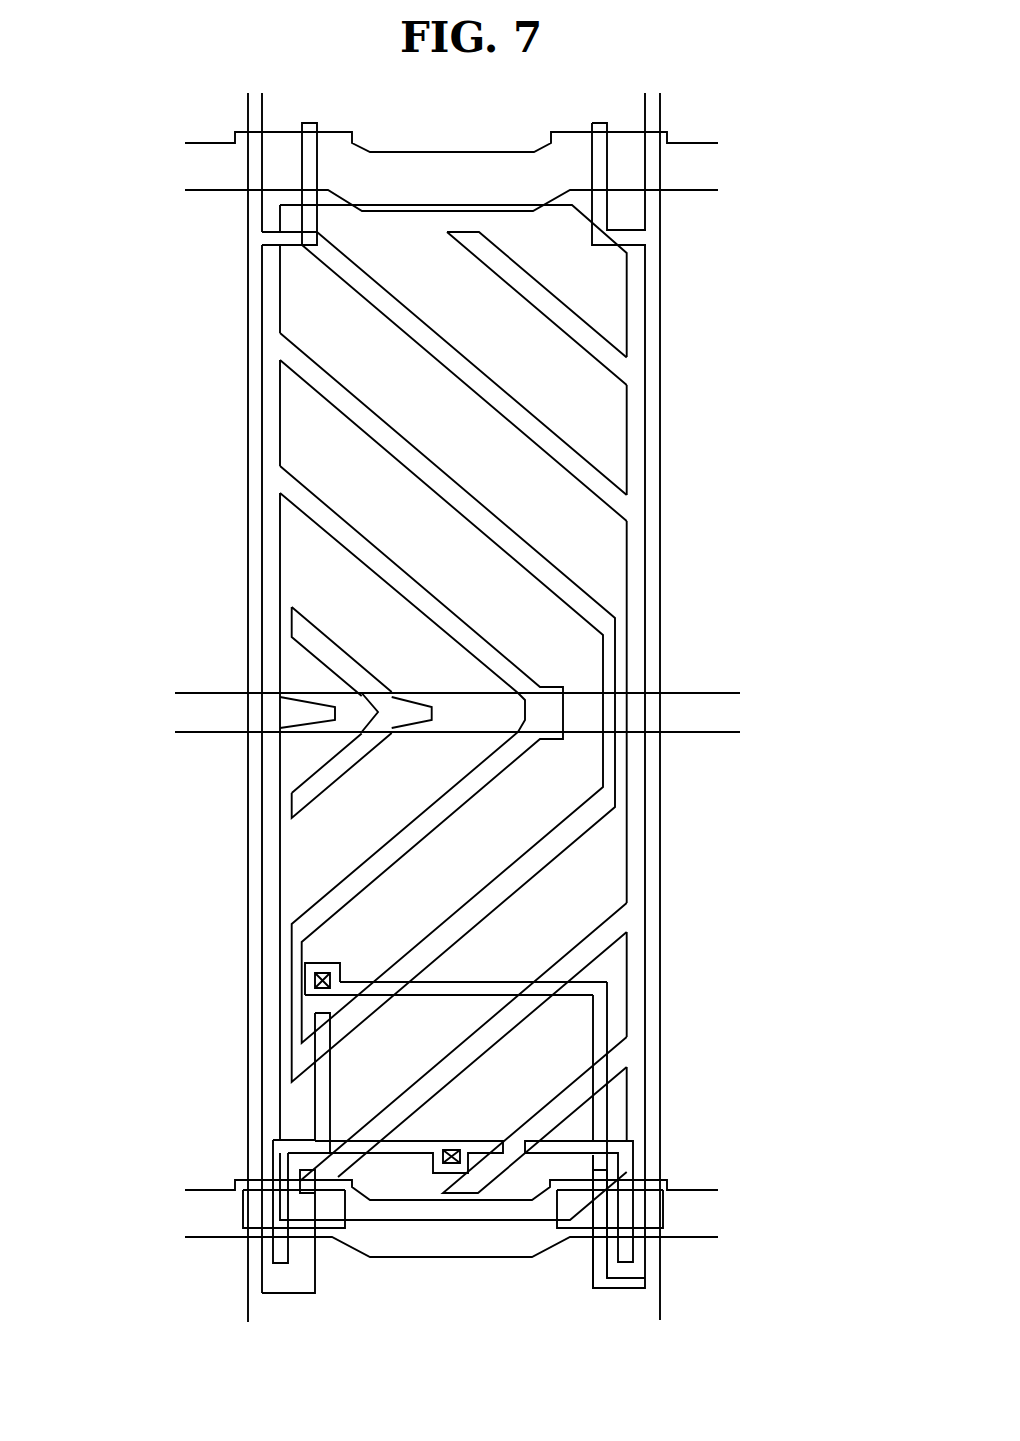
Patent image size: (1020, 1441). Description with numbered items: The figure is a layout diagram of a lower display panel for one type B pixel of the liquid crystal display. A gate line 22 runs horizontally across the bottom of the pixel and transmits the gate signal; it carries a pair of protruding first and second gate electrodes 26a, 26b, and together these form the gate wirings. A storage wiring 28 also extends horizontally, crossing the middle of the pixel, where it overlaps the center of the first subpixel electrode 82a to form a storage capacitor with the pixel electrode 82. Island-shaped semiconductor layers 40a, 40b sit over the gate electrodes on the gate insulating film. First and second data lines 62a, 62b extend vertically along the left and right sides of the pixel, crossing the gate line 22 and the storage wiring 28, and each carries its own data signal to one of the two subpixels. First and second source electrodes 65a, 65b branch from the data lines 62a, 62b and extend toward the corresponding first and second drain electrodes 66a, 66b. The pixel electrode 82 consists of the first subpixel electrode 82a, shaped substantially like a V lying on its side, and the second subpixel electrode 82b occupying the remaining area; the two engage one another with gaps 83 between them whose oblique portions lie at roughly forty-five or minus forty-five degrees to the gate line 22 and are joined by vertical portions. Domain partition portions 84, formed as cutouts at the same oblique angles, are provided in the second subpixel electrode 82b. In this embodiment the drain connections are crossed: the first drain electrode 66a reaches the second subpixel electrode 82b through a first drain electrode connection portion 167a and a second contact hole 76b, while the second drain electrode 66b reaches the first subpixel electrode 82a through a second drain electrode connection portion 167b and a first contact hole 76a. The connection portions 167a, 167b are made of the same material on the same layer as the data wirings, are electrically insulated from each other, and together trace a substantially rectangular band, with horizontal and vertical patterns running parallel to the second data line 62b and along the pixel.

The gate line 22 is at (400, 1250).
The first gate electrode 26a is at (275, 1180).
The second gate electrode 26b is at (655, 1185).
The storage wiring 28 is at (175, 740).
The semiconductor layer 40a is at (243, 1210).
The semiconductor layer 40b is at (663, 1210).
The first data line 62a is at (243, 607).
The second data line 62b is at (665, 607).
The first source electrode 65a is at (318, 1210).
The second source electrode 65b is at (592, 1280).
The first drain electrode 66a is at (300, 1150).
The second drain electrode 66b is at (640, 1160).
The first contact hole 76a is at (305, 978).
The second contact hole 76b is at (455, 1165).
The pixel electrode 82 is at (339, 693).
The first subpixel electrode 82a is at (265, 448).
The second subpixel electrode 82b is at (280, 312).
The gaps 83 is at (430, 470).
The domain partition portions 84 is at (541, 296).
The first drain electrode connection portion 167a is at (186, 1138).
The second drain electrode connection portion 167b is at (598, 1116).